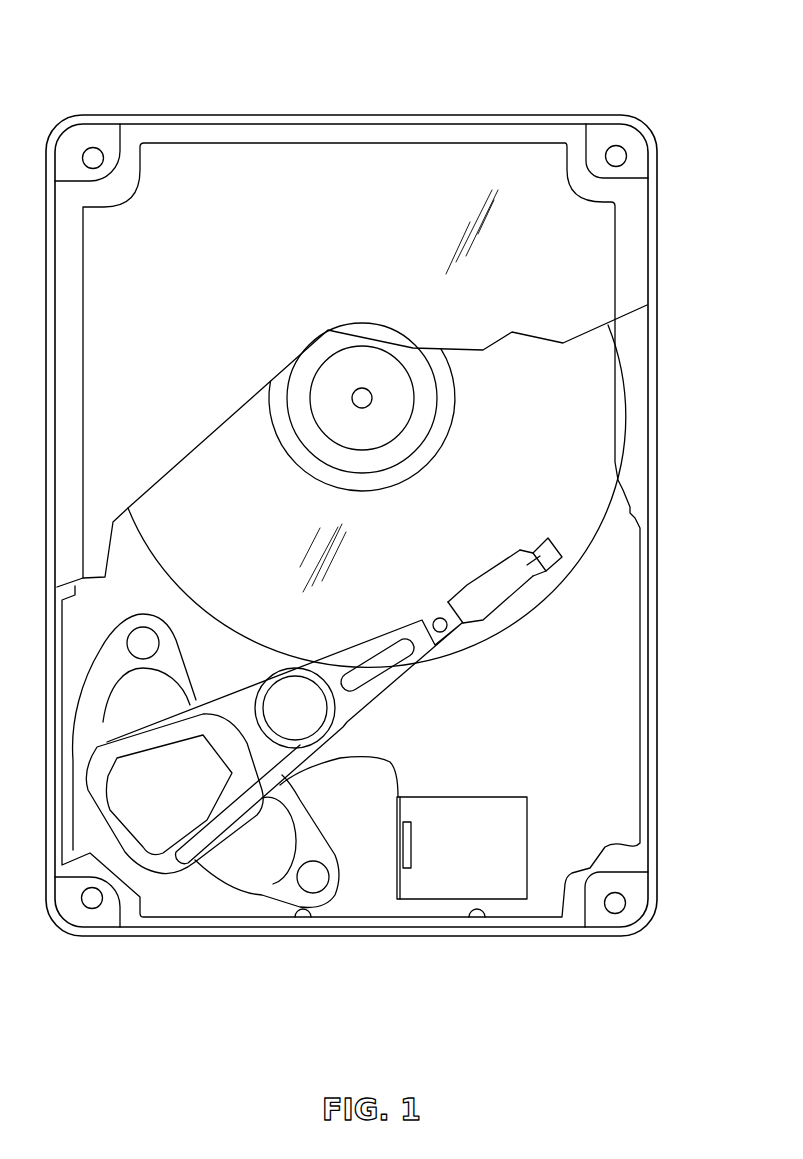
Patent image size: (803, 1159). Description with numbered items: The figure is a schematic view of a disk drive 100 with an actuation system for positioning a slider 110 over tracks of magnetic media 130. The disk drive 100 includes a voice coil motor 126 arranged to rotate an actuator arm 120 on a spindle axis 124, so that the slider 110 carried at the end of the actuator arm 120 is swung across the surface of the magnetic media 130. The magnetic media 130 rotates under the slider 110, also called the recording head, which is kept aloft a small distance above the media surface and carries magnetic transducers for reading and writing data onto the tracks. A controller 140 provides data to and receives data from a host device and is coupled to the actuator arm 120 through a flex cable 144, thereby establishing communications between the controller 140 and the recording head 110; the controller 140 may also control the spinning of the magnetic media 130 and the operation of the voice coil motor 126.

The disk drive 100 is at (597, 70).
The slider 110 is at (548, 561).
The actuator arm 120 is at (388, 695).
The spindle axis 124 is at (290, 672).
The voice coil motor 126 is at (178, 872).
The magnetic media 130 is at (227, 578).
The controller 140 is at (508, 812).
The flex cable 144 is at (397, 765).